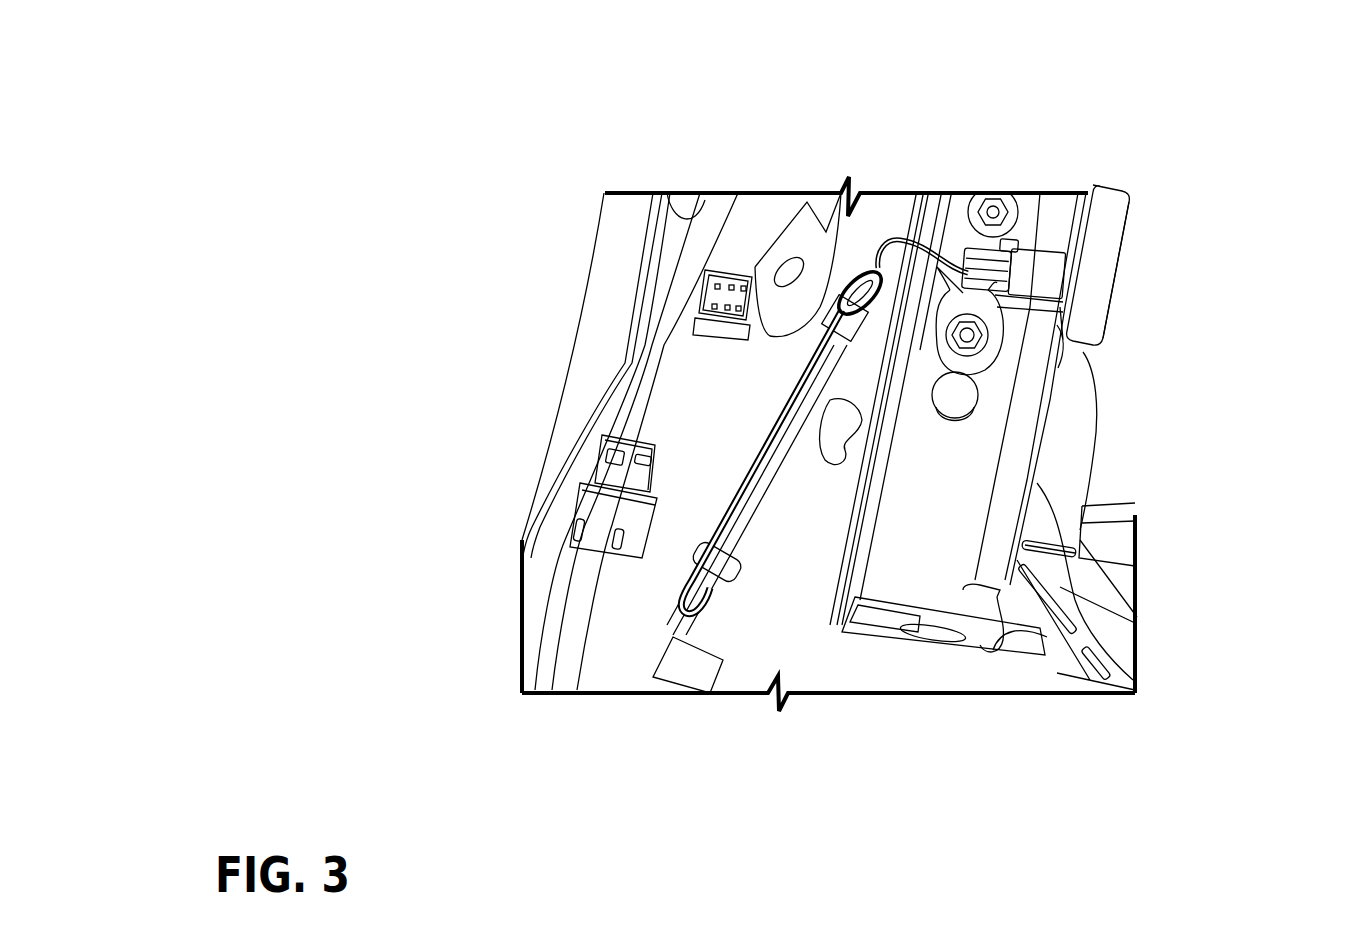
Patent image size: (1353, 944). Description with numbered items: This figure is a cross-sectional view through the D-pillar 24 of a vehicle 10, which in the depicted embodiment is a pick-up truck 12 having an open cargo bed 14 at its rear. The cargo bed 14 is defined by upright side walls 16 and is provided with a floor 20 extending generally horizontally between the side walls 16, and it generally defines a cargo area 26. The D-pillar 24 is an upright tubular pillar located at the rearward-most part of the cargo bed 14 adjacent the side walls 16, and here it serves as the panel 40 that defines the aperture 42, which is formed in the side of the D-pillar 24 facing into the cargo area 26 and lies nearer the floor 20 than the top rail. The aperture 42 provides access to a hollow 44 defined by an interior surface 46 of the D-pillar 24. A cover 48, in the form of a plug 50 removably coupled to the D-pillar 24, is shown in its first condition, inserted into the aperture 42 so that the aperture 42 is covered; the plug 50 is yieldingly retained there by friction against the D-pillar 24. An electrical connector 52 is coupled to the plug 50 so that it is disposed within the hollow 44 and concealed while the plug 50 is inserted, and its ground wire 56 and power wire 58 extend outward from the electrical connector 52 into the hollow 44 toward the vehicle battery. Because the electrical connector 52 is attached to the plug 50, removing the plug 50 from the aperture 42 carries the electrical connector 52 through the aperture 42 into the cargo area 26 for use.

The vehicle 10 is at (1144, 98).
The pick-up truck 12 is at (1168, 112).
The cargo bed 14 is at (1096, 540).
The side walls 16 is at (1097, 418).
The floor 20 is at (1117, 632).
The D-pillar 24 is at (943, 560).
The cargo area 26 is at (1126, 542).
The panel 40 is at (1130, 617).
The aperture 42 is at (1077, 350).
The hollow 44 is at (905, 513).
The interior surface 46 is at (922, 585).
The cover 48 is at (1142, 212).
The plug 50 is at (1108, 278).
The electrical connector 52 is at (1036, 245).
The ground wire 56 is at (888, 242).
The power wire 58 is at (953, 235).